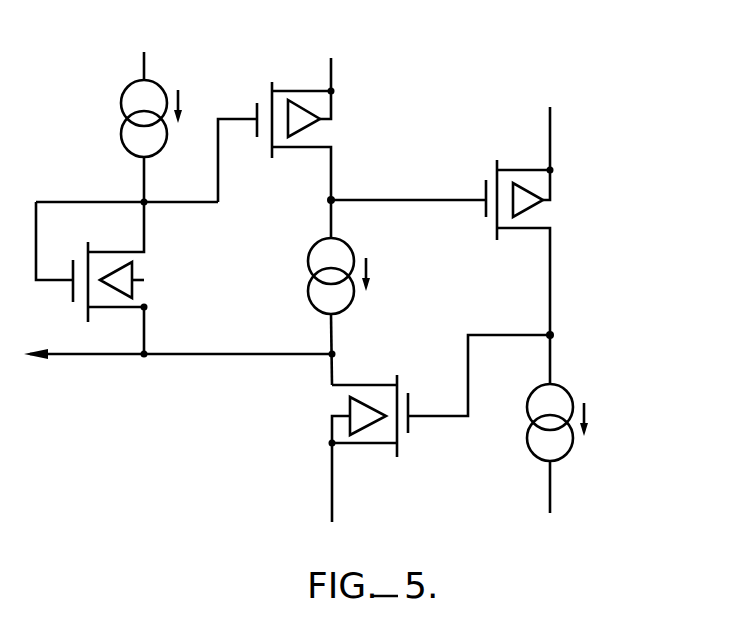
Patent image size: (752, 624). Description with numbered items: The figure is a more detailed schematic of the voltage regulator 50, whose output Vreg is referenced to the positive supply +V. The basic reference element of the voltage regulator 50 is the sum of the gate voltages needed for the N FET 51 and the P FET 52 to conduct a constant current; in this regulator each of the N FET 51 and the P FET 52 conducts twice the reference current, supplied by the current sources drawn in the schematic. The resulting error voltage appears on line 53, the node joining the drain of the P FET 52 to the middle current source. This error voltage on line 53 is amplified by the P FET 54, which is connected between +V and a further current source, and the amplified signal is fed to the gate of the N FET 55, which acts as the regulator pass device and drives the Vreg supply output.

The voltage regulator 50 is at (369, 290).
The N FET 51 is at (152, 273).
The P FET 52 is at (277, 167).
The line 53 is at (333, 198).
The P FET 54 is at (556, 206).
The N FET 55 is at (409, 465).